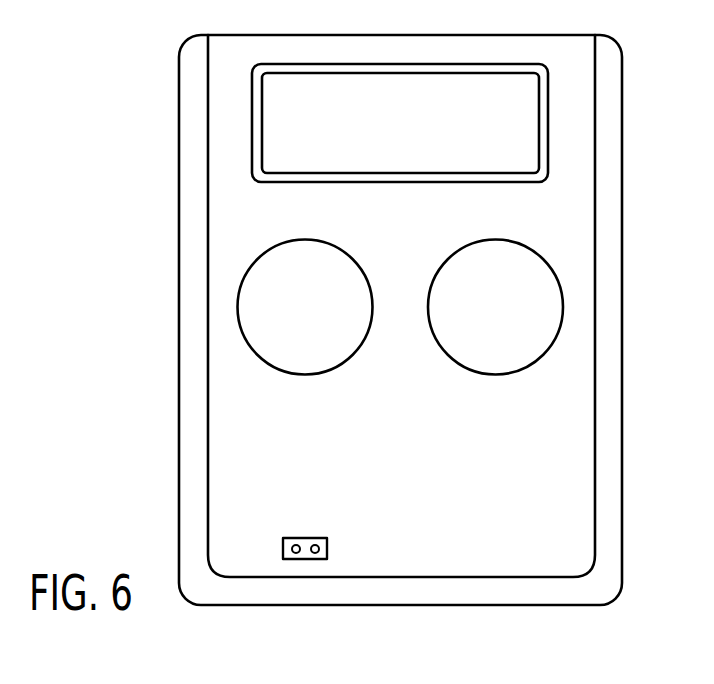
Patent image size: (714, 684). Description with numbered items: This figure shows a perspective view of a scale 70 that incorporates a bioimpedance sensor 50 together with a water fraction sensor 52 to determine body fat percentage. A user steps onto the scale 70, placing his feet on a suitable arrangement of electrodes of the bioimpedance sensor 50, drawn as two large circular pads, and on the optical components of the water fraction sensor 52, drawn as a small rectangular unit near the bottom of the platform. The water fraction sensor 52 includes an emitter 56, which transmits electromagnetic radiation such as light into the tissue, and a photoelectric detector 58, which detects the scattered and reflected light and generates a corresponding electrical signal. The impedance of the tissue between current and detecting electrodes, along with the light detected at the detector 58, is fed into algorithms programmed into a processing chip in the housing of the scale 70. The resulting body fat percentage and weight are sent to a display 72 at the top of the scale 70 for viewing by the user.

The scale 70 is at (136, 93).
The display 72 is at (548, 121).
The bioimpedance sensor 50 is at (495, 375).
The water fraction sensor 52 is at (327, 548).
The emitter 56 is at (296, 545).
The photoelectric detector 58 is at (316, 545).